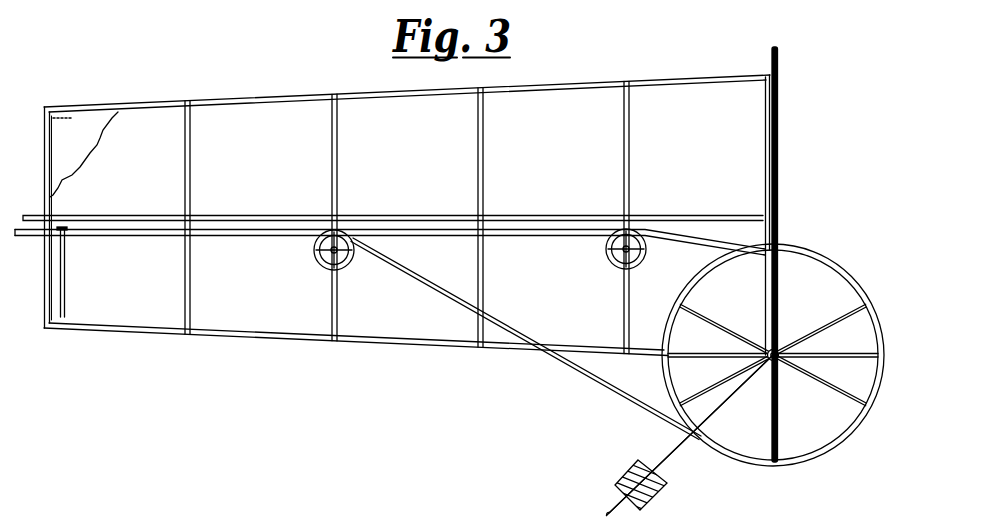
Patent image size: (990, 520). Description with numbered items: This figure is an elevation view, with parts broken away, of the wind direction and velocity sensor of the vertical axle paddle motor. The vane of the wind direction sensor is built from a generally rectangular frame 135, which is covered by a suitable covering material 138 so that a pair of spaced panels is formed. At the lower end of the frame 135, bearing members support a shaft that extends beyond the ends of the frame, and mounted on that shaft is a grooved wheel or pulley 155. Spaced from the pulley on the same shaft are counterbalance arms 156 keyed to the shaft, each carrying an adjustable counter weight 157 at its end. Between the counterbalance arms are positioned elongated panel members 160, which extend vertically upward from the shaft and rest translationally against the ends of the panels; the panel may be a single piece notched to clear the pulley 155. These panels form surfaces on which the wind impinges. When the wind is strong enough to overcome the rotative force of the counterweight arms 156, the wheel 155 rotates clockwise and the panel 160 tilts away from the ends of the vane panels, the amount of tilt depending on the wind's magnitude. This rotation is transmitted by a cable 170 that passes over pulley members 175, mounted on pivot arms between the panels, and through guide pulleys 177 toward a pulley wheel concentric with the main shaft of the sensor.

The rectangular frame 135 is at (293, 342).
The covering material 138 is at (103, 130).
The grooved wheel or pulley 155 is at (862, 288).
The counterbalance arm 156 is at (666, 447).
The adjustable counter weight 157 is at (627, 470).
The elongated panel member 160 is at (778, 222).
The cable 170 is at (602, 390).
The pulley member 175 is at (343, 270).
The guide pulley 177 is at (67, 241).